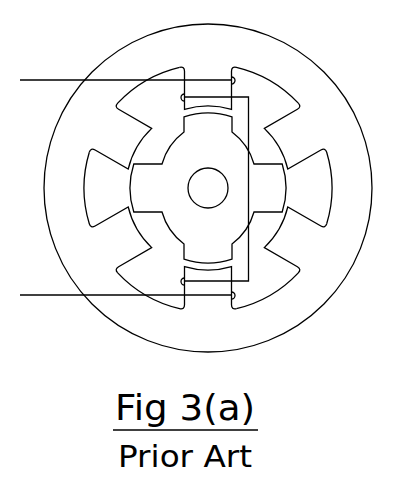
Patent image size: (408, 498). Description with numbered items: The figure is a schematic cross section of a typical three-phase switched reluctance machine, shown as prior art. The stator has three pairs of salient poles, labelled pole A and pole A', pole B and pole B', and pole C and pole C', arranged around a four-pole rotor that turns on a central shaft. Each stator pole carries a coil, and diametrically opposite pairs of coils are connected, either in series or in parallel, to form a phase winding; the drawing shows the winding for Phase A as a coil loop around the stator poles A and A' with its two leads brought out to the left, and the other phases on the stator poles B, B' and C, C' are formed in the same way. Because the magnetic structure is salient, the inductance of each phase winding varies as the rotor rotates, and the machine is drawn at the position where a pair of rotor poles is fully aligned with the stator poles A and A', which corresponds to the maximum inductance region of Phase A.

The stator pole A is at (239, 78).
The stator pole A' is at (177, 298).
The stator pole B is at (134, 118).
The stator pole B' is at (281, 258).
The stator pole C is at (118, 212).
The stator pole C' is at (298, 163).